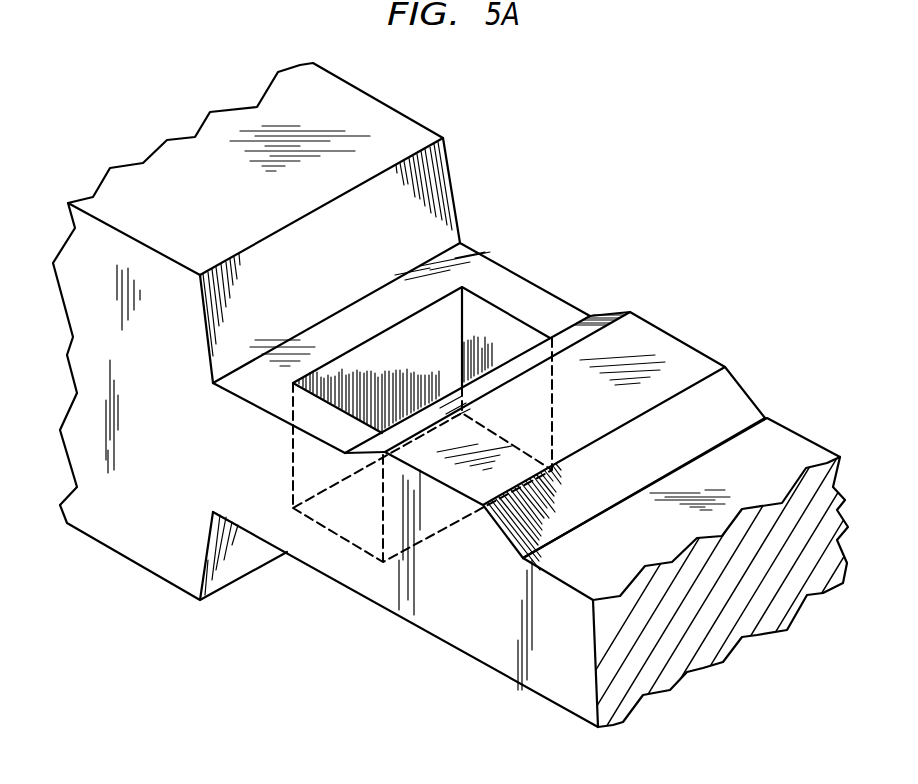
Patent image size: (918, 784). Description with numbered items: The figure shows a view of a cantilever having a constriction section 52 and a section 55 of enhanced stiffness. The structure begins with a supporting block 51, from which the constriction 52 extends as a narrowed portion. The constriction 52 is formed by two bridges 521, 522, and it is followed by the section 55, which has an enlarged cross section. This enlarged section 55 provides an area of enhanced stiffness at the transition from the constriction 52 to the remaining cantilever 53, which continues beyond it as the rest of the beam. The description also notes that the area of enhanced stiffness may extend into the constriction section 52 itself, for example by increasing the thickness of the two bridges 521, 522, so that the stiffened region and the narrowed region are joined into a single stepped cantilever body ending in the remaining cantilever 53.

The upper block 51 is at (377, 125).
The constriction section 52 is at (492, 328).
The bridge 521 is at (557, 318).
The bridge 522 is at (328, 555).
The remaining cantilever 53 is at (777, 420).
The section having an enlarged cross section 55 is at (703, 347).